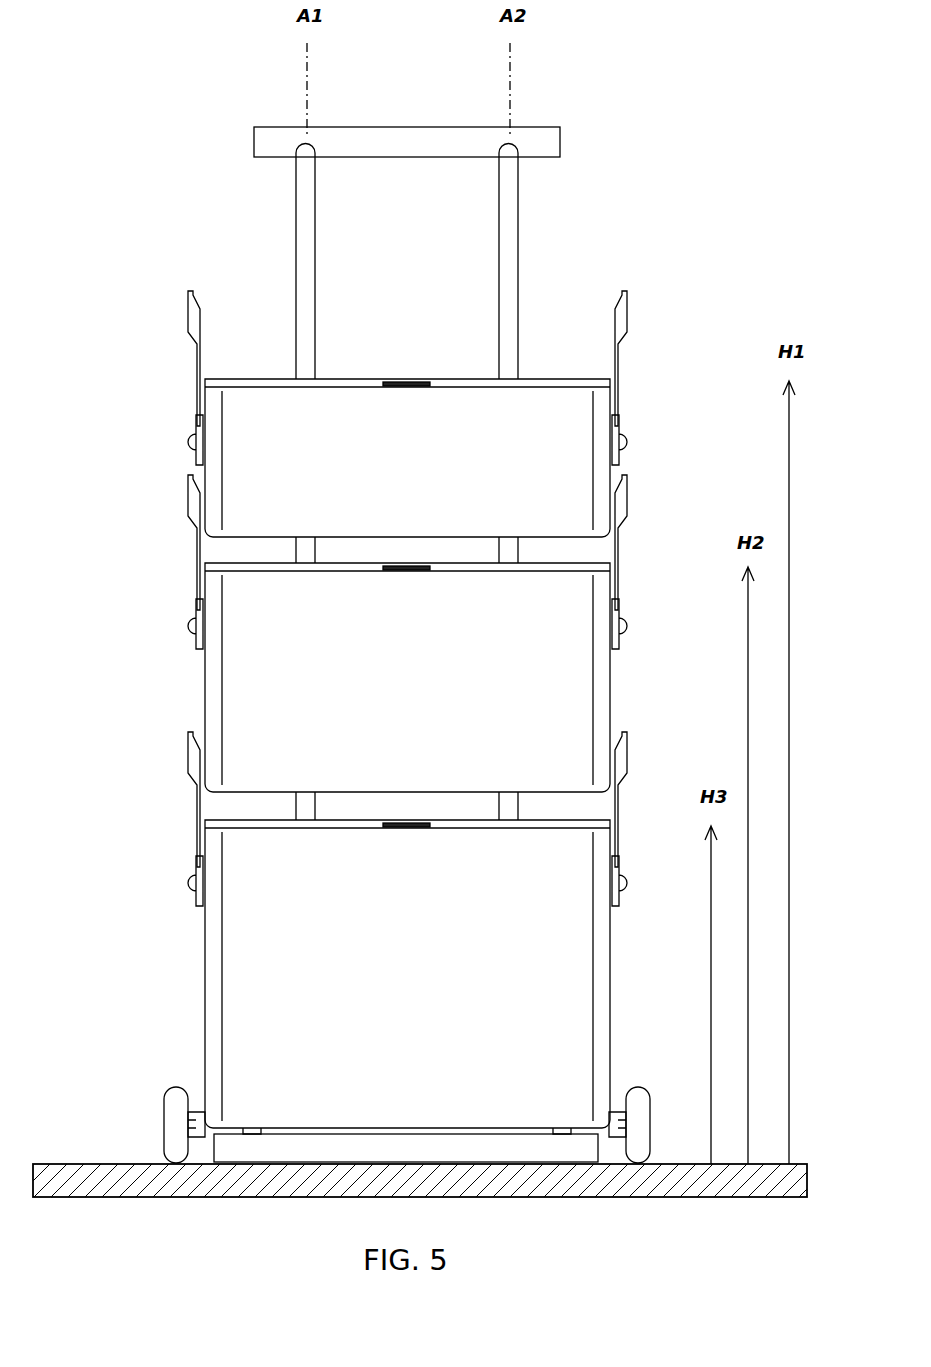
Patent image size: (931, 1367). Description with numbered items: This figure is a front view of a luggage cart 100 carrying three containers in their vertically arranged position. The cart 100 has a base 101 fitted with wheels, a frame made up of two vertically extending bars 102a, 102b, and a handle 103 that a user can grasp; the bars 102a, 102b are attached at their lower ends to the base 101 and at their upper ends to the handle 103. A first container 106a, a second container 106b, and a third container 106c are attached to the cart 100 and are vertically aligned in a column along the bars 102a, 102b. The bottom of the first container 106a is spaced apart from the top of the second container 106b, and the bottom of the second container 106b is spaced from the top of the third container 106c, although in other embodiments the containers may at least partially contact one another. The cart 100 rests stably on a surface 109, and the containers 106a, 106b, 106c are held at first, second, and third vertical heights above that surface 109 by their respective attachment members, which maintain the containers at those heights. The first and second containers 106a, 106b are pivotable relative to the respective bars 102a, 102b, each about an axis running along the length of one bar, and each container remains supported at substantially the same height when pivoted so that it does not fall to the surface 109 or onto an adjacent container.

The luggage cart 100 is at (624, 93).
The base 101 is at (272, 1152).
The first bar 102a is at (305, 213).
The second bar 102b is at (510, 213).
The handle 103 is at (272, 143).
The first container 106a is at (297, 463).
The second container 106b is at (287, 703).
The third container 106c is at (285, 928).
The surface 109 is at (733, 1191).